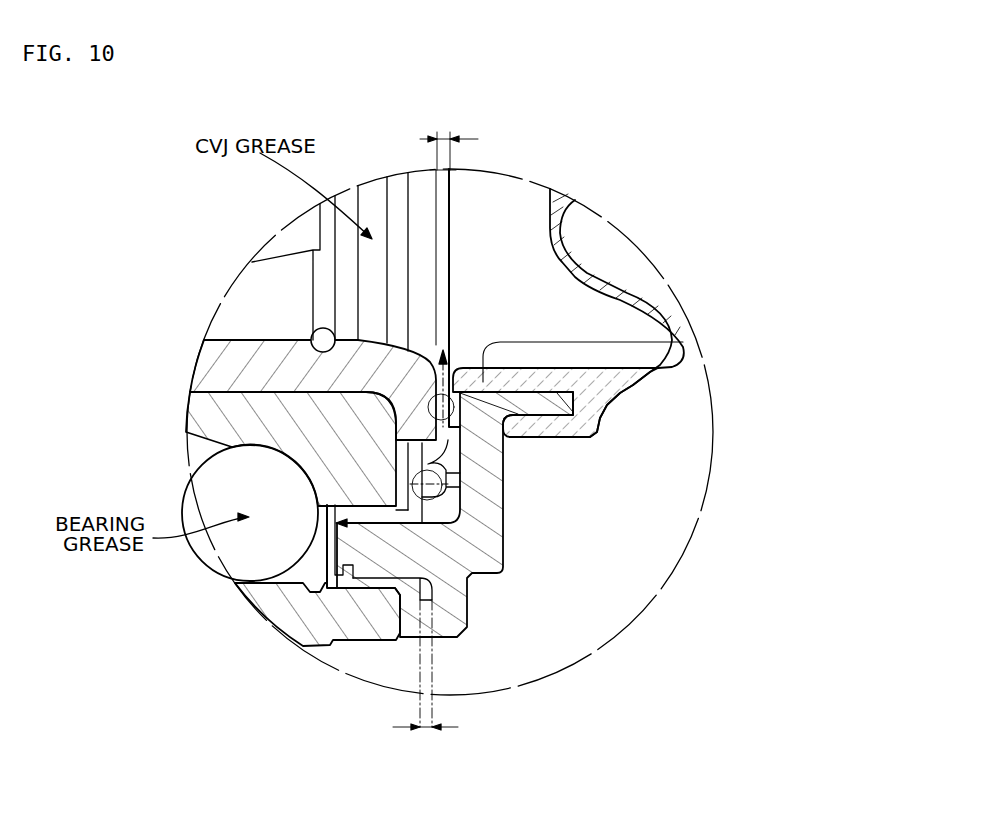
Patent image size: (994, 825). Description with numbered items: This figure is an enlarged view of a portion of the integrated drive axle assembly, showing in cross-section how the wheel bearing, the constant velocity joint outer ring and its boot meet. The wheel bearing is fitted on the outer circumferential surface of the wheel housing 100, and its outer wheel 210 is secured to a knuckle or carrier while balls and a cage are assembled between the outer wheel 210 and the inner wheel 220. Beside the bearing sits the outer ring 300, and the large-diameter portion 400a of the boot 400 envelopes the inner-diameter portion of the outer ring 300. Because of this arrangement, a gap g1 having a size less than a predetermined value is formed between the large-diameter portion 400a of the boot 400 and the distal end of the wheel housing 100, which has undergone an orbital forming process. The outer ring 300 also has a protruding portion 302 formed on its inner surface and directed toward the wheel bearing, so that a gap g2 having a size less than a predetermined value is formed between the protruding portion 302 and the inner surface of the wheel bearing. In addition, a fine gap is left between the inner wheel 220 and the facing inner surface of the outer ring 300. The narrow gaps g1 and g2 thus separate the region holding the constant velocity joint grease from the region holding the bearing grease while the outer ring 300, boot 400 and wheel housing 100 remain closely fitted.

The wheel housing 100 is at (237, 352).
The inner wheel 220 is at (240, 412).
The outer wheel 210 is at (253, 613).
The outer ring 300 is at (487, 540).
The protruding portion 302 is at (452, 483).
The boot 400 is at (620, 295).
The large-diameter portion 400a is at (686, 342).
The gap g1 is at (449, 140).
The gap g2 is at (425, 680).